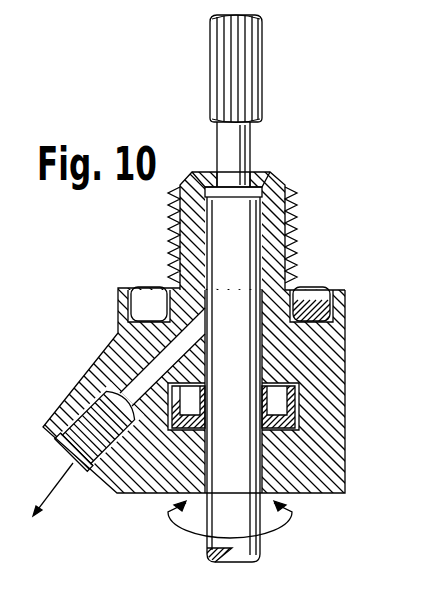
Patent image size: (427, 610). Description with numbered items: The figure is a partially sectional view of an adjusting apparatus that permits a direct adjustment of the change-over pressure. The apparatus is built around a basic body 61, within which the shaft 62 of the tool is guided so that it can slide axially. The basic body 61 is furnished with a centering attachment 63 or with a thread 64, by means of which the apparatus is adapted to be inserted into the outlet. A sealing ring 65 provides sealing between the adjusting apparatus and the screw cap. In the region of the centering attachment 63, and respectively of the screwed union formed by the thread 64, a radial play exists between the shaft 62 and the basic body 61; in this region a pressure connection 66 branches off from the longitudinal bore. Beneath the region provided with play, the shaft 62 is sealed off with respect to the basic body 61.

The basic body 61 is at (333, 442).
The shaft 62 is at (250, 353).
The centering attachment 63 is at (298, 243).
The thread 64 is at (300, 202).
The sealing ring 65 is at (322, 288).
The pressure connection 66 is at (82, 388).